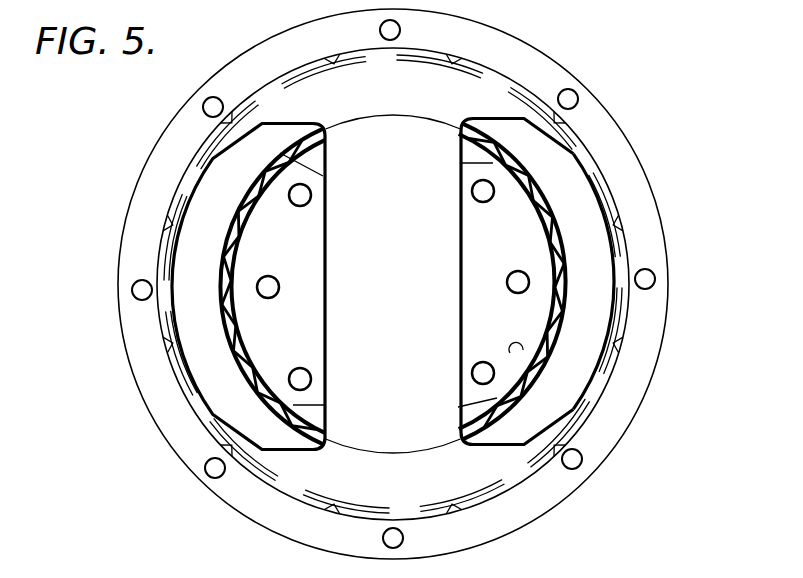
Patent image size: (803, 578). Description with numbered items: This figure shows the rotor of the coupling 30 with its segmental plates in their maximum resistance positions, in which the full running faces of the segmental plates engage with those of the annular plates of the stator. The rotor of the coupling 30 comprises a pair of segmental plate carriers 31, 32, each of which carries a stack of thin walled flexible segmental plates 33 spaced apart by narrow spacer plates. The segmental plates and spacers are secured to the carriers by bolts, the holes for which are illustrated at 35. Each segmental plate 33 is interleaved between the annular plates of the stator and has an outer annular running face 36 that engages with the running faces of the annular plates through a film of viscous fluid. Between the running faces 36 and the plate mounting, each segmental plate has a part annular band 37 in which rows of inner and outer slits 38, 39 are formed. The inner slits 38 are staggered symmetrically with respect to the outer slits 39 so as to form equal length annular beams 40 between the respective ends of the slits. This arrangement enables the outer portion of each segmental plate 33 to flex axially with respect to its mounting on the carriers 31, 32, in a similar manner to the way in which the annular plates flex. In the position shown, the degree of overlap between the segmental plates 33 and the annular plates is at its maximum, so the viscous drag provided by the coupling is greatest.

The rotor of the coupling 30 is at (345, 145).
The segmental plate carrier 31 is at (277, 322).
The segmental plate carrier 32 is at (505, 330).
The segmental plate 33 is at (550, 158).
The bolt hole 35 is at (468, 192).
The outer annular running face 36 is at (577, 197).
The part annular band 37 is at (530, 422).
The inner slit 38 is at (503, 392).
The outer slit 39 is at (517, 350).
The annular beam 40 is at (558, 263).